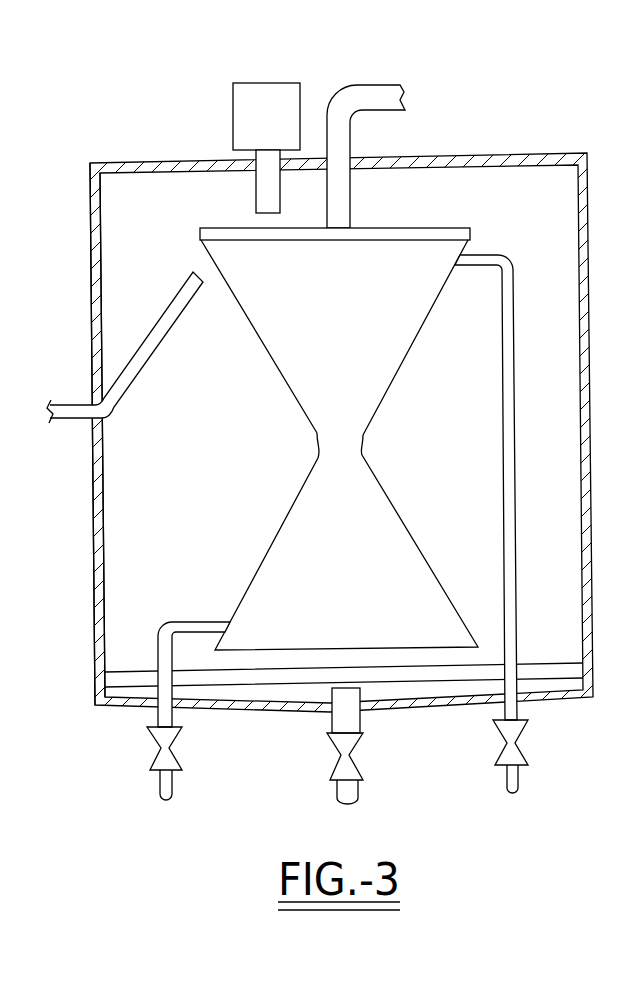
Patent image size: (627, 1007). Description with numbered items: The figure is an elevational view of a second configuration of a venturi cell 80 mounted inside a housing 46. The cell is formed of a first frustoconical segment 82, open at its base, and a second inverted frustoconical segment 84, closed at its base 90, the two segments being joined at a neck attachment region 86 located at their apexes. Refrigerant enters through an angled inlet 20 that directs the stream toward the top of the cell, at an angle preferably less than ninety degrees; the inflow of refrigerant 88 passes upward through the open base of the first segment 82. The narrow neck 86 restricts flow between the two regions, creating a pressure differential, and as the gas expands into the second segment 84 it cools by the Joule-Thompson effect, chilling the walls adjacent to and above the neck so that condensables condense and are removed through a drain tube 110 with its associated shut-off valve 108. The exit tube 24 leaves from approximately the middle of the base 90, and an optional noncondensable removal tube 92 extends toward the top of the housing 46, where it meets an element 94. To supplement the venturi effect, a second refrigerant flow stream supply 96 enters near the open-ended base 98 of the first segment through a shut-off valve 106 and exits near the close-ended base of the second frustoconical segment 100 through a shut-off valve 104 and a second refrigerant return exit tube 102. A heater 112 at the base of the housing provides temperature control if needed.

The venturi cell 80 is at (162, 156).
The housing 46 is at (92, 306).
The motor / drive unit 94 is at (243, 83).
The noncondensable removal tube 92 is at (256, 190).
The exit tube 24 is at (366, 85).
The inlet 20 is at (142, 365).
The base 90 is at (400, 226).
The second frustoconical segment 100 is at (478, 255).
The second inverted frustoconical segment 84 is at (395, 372).
The neck attachment region 86 is at (363, 437).
The first frustoconical segment 82 is at (397, 500).
The inflow of refrigerant 88 is at (305, 652).
The open-ended base 98 is at (183, 622).
The shut-off valve 106 is at (152, 742).
The second refrigerant flow stream supply 96 is at (160, 792).
The drain tube 110 is at (355, 725).
The shut-off valve 108 is at (362, 770).
The shut-off valve 104 is at (525, 752).
The second refrigerant return exit tube 102 is at (518, 782).
The heater 112 is at (553, 675).